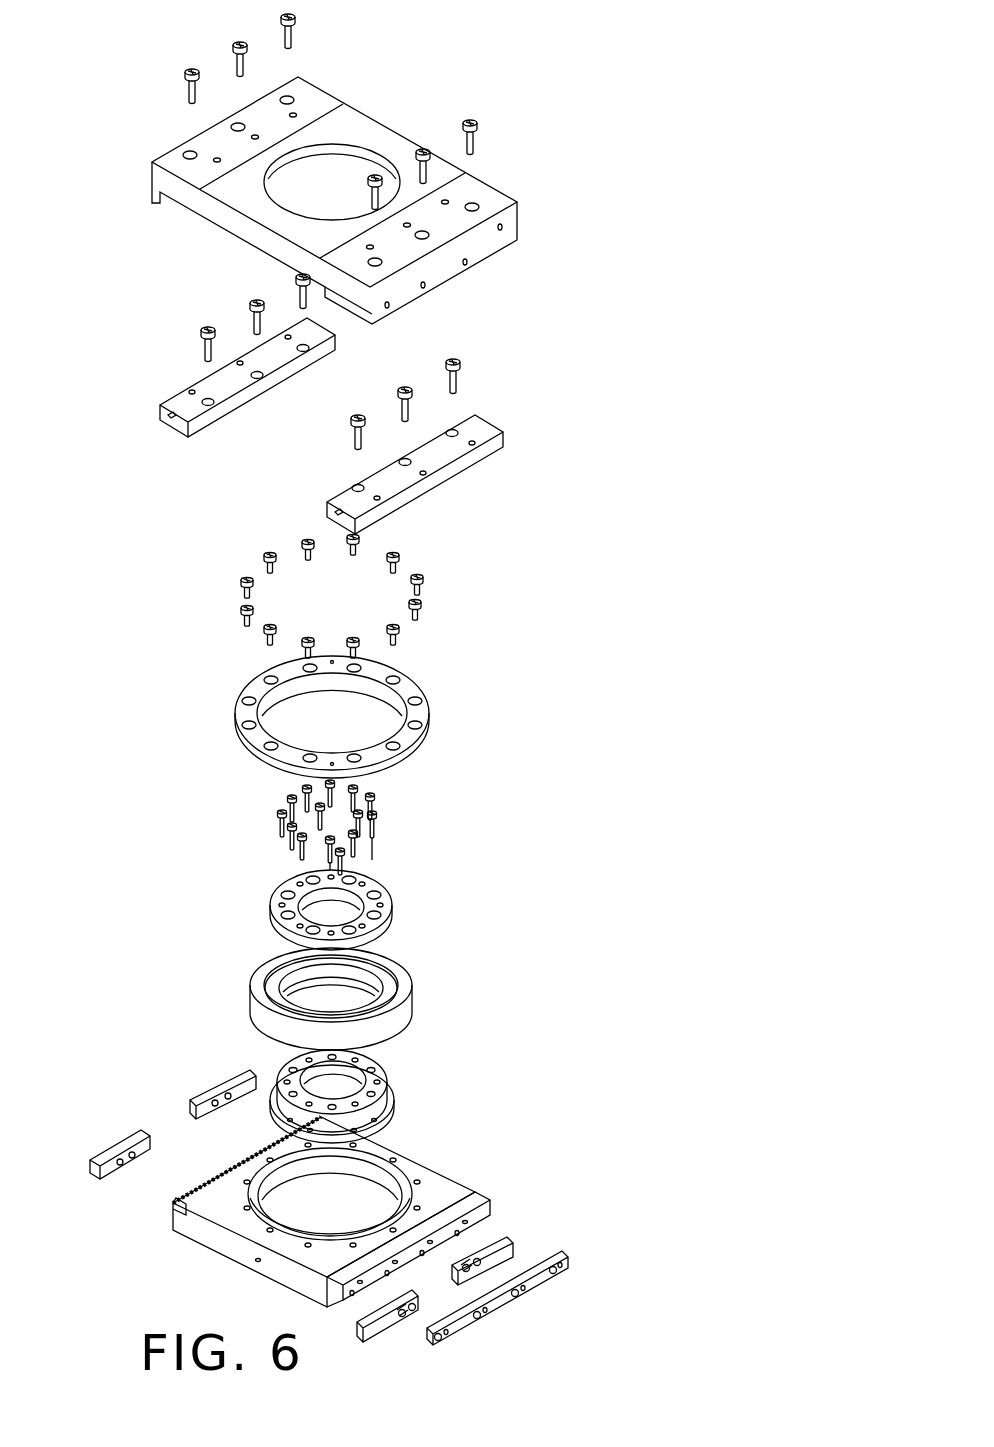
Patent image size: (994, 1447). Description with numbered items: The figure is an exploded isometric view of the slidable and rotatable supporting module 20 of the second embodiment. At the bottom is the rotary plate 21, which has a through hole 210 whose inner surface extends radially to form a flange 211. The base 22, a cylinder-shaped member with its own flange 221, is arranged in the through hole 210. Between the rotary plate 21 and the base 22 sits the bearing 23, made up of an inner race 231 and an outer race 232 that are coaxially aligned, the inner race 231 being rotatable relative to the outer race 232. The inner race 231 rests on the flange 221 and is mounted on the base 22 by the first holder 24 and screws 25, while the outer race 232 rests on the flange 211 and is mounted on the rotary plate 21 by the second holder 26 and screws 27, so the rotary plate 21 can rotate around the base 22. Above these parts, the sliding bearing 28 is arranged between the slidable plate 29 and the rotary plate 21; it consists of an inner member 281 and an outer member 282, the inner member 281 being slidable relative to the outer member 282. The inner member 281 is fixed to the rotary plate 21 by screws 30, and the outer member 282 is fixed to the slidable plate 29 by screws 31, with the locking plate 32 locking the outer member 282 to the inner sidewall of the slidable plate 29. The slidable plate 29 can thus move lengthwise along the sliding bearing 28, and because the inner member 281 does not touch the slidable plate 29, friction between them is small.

The slidable and rotatable supporting module 20 is at (452, 57).
The rotary plate 21 is at (374, 1208).
The through hole 210 is at (345, 1188).
The flange 211 is at (402, 1188).
The base 22 is at (370, 1091).
The flange 221 is at (389, 1102).
The bearing 23 is at (333, 989).
The inner race 231 is at (388, 980).
The outer race 232 is at (407, 990).
The first holder 24 is at (382, 898).
The screws 25 is at (388, 808).
The second holder 26 is at (418, 715).
The screws 27 is at (422, 572).
The sliding bearing 28 is at (391, 426).
The inner member 281 is at (478, 415).
The outer member 282 is at (488, 433).
The slidable plate 29 is at (493, 202).
The screws 30 is at (462, 372).
The screws 31 is at (476, 120).
The locking plate 32 is at (565, 1262).